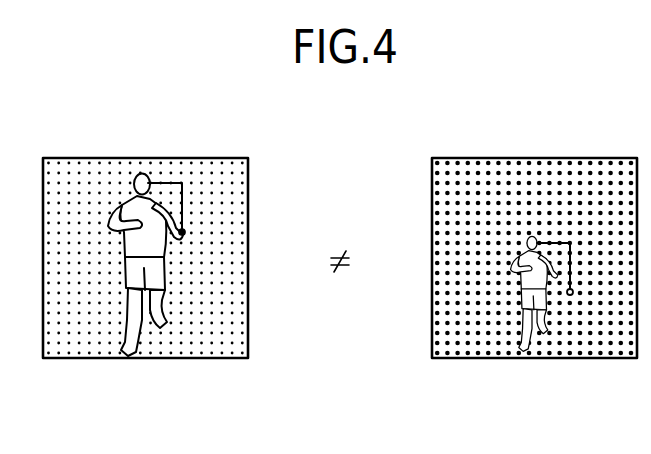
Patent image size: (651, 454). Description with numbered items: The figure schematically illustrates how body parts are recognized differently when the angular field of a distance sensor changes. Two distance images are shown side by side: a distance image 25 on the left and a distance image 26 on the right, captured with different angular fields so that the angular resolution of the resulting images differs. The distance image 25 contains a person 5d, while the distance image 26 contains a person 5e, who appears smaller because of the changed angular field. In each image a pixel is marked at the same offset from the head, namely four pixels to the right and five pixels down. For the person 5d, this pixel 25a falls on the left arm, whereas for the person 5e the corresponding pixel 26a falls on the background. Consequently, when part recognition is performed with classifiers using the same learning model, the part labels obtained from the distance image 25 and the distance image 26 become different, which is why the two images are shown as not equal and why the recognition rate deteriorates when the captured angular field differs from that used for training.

The person 5d is at (139, 184).
The distance image 25 is at (215, 158).
The pixel 25a is at (183, 233).
The person 5e is at (530, 242).
The distance image 26 is at (607, 158).
The pixel 26a is at (570, 295).